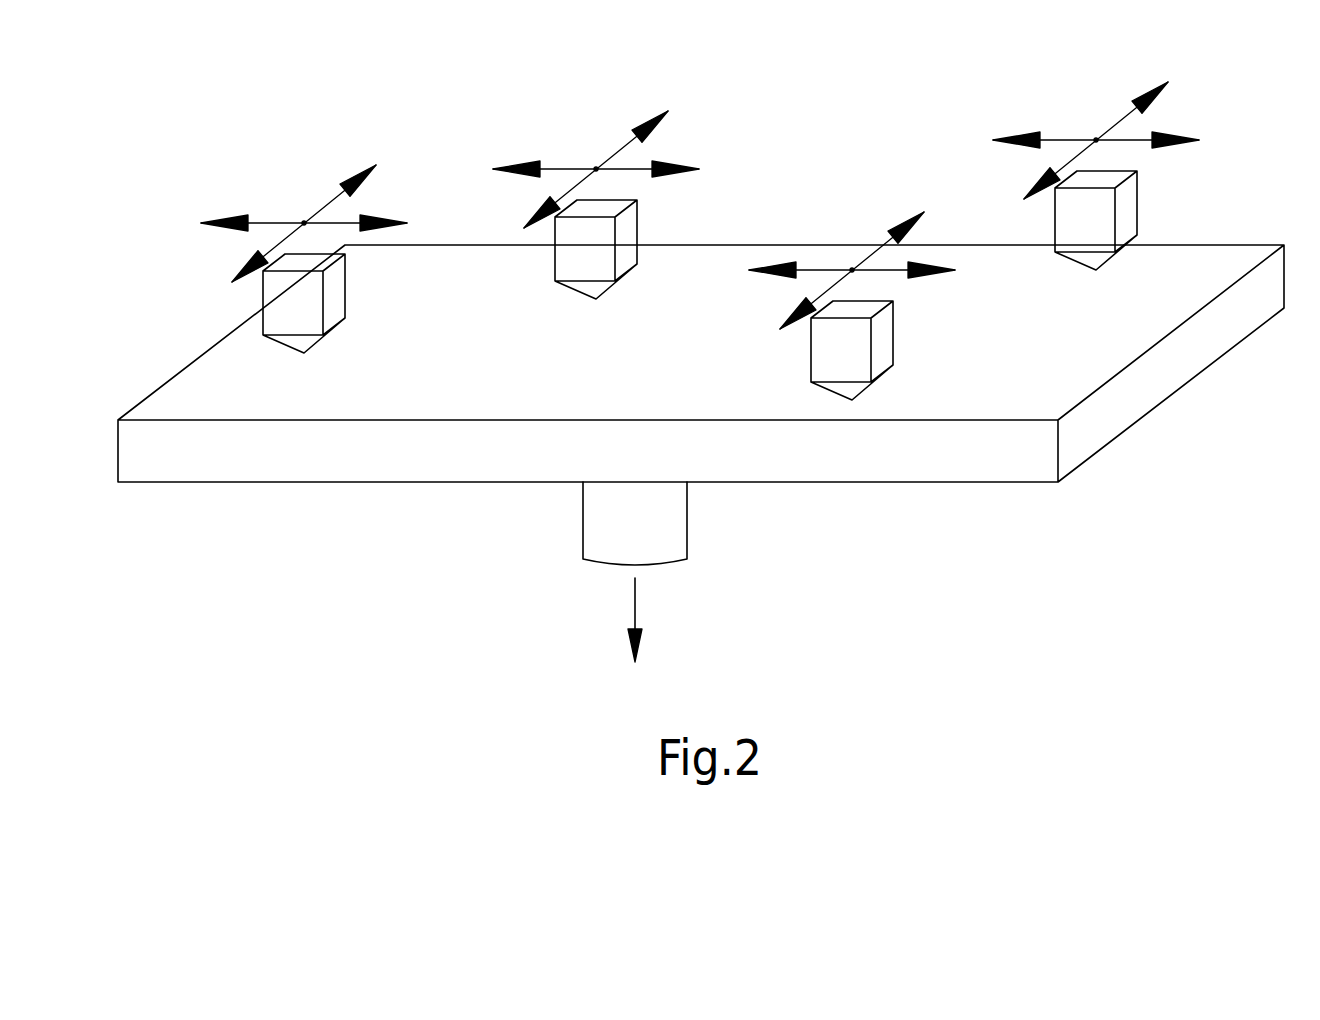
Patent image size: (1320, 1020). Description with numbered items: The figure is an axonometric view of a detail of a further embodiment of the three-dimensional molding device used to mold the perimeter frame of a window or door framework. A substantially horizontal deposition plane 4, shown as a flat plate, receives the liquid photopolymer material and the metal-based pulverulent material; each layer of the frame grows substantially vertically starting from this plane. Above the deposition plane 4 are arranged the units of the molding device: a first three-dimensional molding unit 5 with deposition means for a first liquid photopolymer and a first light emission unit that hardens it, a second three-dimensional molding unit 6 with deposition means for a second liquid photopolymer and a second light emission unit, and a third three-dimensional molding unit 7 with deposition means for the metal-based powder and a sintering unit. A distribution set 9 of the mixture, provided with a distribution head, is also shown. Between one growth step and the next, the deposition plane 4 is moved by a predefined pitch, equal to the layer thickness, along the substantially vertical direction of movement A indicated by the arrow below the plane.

The deposition plane 4 is at (1110, 412).
The first three-dimensional molding unit 5 is at (290, 303).
The second three-dimensional molding unit 6 is at (623, 252).
The third three-dimensional molding unit 7 is at (1133, 217).
The distribution set 9 is at (880, 349).
The direction of movement A is at (635, 603).